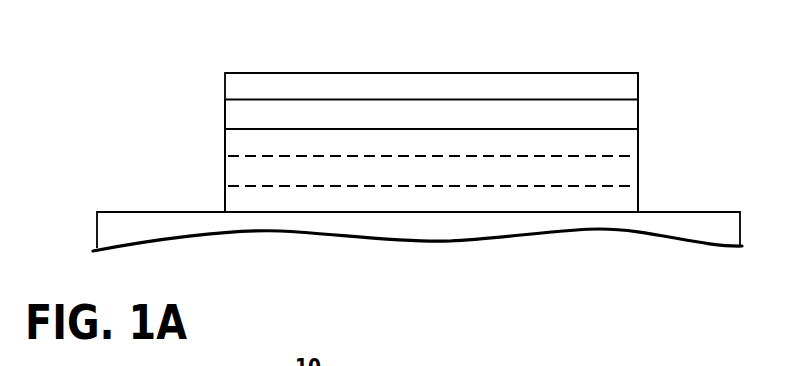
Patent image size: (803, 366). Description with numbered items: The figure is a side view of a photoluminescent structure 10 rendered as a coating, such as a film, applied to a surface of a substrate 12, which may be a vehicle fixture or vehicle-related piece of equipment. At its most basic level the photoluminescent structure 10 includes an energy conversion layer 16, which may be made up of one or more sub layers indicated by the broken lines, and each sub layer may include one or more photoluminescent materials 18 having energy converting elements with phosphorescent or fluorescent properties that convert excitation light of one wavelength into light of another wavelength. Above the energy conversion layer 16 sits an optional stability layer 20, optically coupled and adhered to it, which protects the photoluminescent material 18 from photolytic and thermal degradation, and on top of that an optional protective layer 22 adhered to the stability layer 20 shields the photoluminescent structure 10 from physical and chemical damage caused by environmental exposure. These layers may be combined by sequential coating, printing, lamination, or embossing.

The photoluminescent structure 10 is at (575, 47).
The substrate 12 is at (685, 211).
The energy conversion layer 16 is at (225, 168).
The photoluminescent material 18 is at (562, 164).
The stability layer 20 is at (225, 116).
The protective layer 22 is at (317, 72).